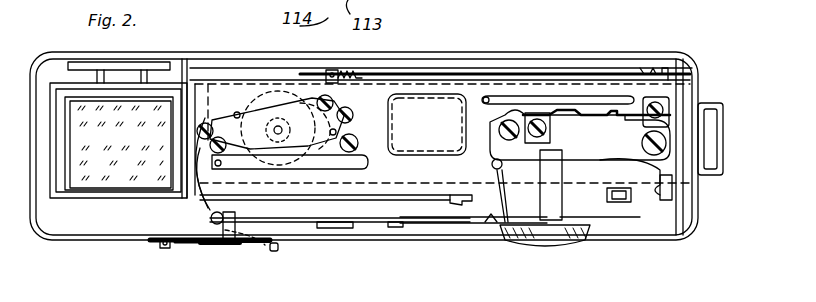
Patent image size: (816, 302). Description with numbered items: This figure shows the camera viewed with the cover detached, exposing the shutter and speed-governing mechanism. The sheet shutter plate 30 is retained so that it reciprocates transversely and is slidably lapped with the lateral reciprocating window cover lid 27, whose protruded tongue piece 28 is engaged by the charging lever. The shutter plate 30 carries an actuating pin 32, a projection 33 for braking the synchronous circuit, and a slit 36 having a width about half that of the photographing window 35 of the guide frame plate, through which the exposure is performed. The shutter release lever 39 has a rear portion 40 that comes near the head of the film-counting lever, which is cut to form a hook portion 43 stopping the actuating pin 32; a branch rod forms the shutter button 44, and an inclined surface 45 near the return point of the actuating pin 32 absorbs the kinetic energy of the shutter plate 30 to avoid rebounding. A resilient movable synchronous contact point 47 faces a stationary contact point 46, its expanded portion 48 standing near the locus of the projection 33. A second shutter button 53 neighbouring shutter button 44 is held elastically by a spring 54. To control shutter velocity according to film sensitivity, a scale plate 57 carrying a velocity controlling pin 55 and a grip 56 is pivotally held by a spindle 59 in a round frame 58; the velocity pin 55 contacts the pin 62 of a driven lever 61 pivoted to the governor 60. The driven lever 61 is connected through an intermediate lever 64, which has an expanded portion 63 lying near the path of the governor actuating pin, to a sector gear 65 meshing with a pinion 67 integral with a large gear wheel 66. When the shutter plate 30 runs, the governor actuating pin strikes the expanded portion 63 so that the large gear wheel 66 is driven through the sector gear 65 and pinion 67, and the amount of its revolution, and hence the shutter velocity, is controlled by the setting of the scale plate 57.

The window cover lid 27 is at (642, 178).
The protruded tongue piece 28 is at (660, 236).
The shutter plate 30 is at (478, 88).
The actuating pin 32 is at (502, 174).
The projection for braking synchronous circuit 33 is at (496, 99).
The photographing window 35 is at (428, 136).
The slit 36 is at (375, 116).
The shutter release lever 39 is at (580, 135).
The rear portion 40 is at (672, 190).
The hook portion 43 is at (555, 220).
The shutter button 44 is at (560, 203).
The inclined surface 45 is at (660, 170).
The stationary contact point 46 is at (618, 120).
The movable synchronous contact point 47 is at (602, 122).
The expanded portion 48 is at (566, 115).
The shutter button 53 is at (582, 236).
The spring 54 is at (487, 223).
The velocity controlling pin 55 is at (240, 240).
The grip 56 is at (280, 248).
The scale plate 57 is at (194, 244).
The round frame 58 is at (162, 246).
The spindle 59 is at (220, 244).
The governor 60 is at (258, 100).
The driven lever 61 is at (198, 200).
The pin 62 is at (232, 245).
The expanded portion 63 is at (266, 155).
The intermediate lever 64 is at (300, 162).
The sector gear 65 is at (336, 160).
The large gear wheel 66 is at (290, 100).
The pinion 67 is at (281, 110).